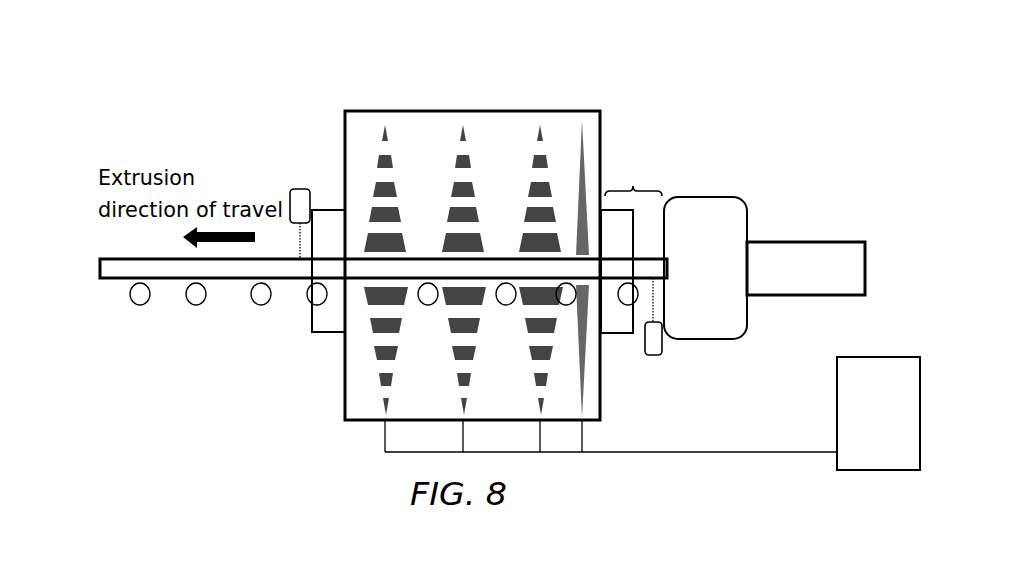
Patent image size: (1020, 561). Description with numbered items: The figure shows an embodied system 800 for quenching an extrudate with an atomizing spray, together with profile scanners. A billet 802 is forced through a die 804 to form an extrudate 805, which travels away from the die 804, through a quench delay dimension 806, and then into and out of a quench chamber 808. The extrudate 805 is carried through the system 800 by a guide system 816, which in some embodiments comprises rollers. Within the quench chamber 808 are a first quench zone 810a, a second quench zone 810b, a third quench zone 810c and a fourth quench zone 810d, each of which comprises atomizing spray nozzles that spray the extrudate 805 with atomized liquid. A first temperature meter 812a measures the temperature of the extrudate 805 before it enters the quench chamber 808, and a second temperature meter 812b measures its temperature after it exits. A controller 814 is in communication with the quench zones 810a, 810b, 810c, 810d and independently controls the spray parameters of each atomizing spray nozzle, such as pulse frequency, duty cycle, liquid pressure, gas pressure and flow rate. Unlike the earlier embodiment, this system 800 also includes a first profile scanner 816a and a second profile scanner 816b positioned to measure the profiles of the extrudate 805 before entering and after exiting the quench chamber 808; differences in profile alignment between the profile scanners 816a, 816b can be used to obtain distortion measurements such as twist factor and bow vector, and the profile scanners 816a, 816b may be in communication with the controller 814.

The system 800 is at (180, 129).
The billet 802 is at (760, 242).
The die 804 is at (708, 340).
The extrudate 805 is at (100, 259).
The quench delay dimension 806 is at (633, 177).
The quench chamber 808 is at (613, 127).
The first quench zone 810a is at (582, 111).
The second quench zone 810b is at (540, 111).
The third quench zone 810c is at (463, 111).
The fourth quench zone 810d is at (385, 111).
The first temperature meter 812a is at (655, 357).
The second temperature meter 812b is at (295, 188).
The controller 814 is at (878, 357).
The guide system 816 is at (116, 292).
The first profile scanner 816a is at (615, 335).
The second profile scanner 816b is at (325, 335).